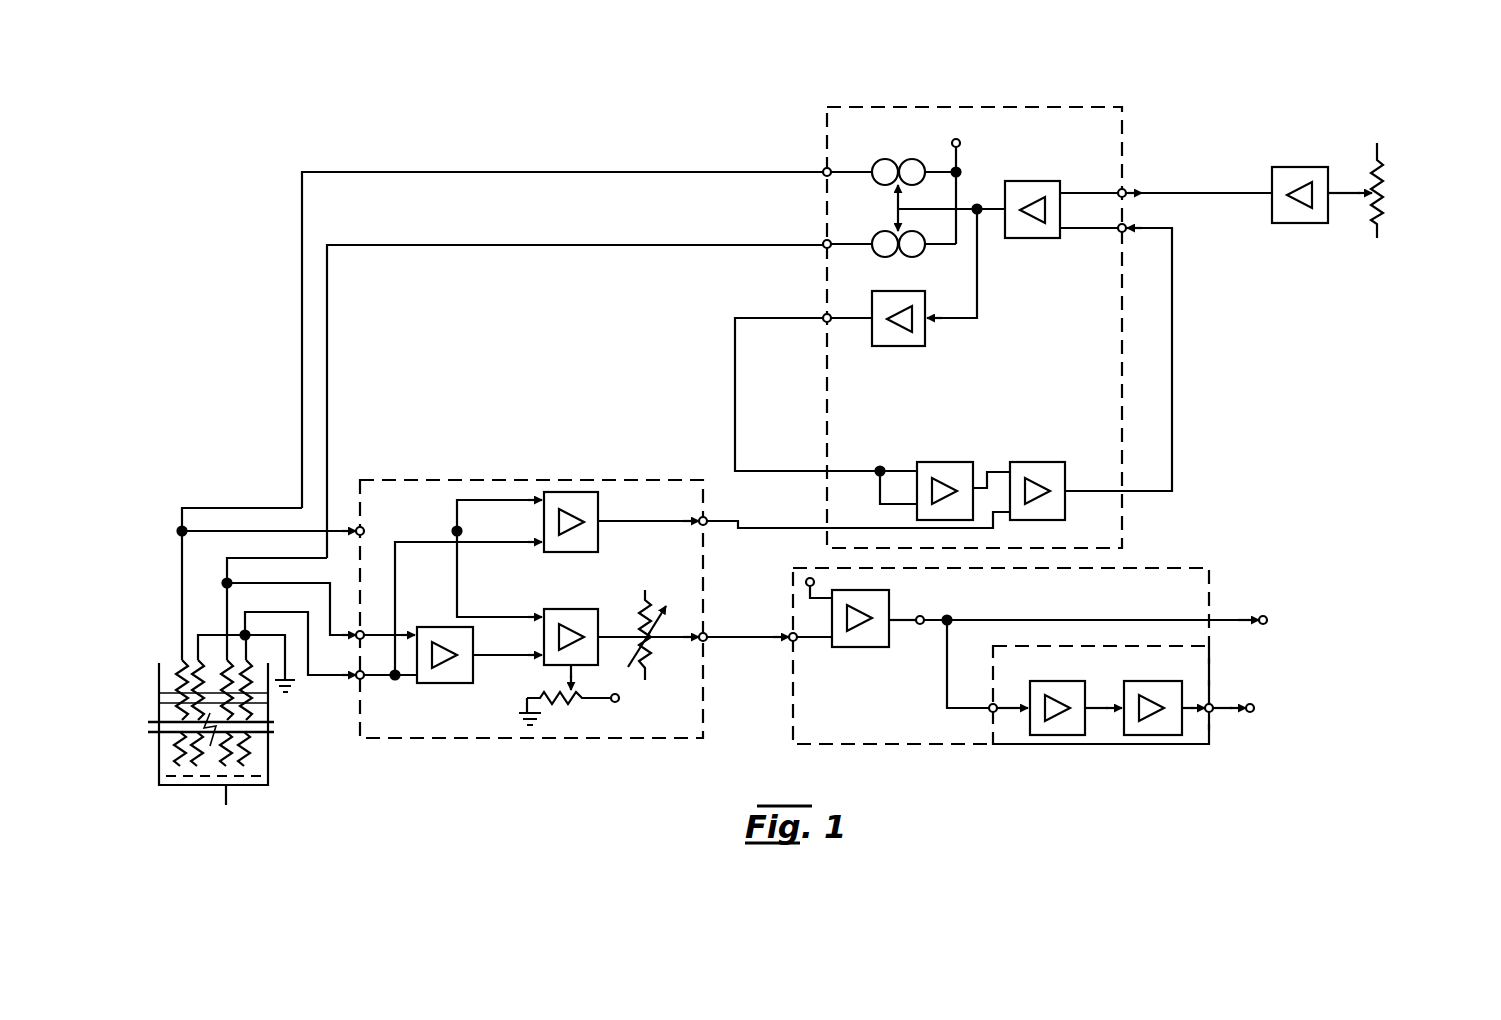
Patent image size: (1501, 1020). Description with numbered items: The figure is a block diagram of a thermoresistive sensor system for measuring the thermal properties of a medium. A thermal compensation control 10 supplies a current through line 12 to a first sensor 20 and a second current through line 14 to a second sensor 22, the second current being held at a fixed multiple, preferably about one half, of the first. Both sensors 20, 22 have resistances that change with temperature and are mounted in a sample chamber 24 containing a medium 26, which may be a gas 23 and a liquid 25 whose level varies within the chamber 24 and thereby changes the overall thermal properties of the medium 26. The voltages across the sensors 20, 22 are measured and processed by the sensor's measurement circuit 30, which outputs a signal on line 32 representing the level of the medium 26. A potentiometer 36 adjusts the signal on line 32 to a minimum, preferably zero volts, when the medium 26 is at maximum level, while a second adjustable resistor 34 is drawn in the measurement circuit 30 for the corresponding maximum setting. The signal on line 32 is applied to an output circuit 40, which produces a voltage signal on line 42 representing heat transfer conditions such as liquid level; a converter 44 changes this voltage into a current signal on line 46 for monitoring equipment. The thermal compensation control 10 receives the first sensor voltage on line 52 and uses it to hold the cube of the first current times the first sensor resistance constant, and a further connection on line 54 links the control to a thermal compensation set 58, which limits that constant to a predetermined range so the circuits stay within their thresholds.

The thermal compensation control 10 is at (1125, 129).
The line 12 is at (425, 168).
The line 14 is at (418, 240).
The sensor 20 is at (168, 683).
The sensor 22 is at (250, 748).
The gas 23 is at (176, 676).
The sample chamber 24 is at (230, 811).
The liquid 25 is at (258, 707).
The medium 26 is at (258, 762).
The sensor's measurement circuit 30 is at (500, 480).
The line 32 is at (738, 642).
The variable resistor 34 is at (640, 620).
The potentiometer 36 is at (573, 702).
The output circuit 40 is at (1142, 568).
The line 42 is at (1222, 620).
The converter 44 is at (1120, 675).
The line 46 is at (1223, 703).
The line 52 is at (733, 520).
The feedback line 54 is at (1173, 326).
The thermal compensation set 58 is at (1301, 167).